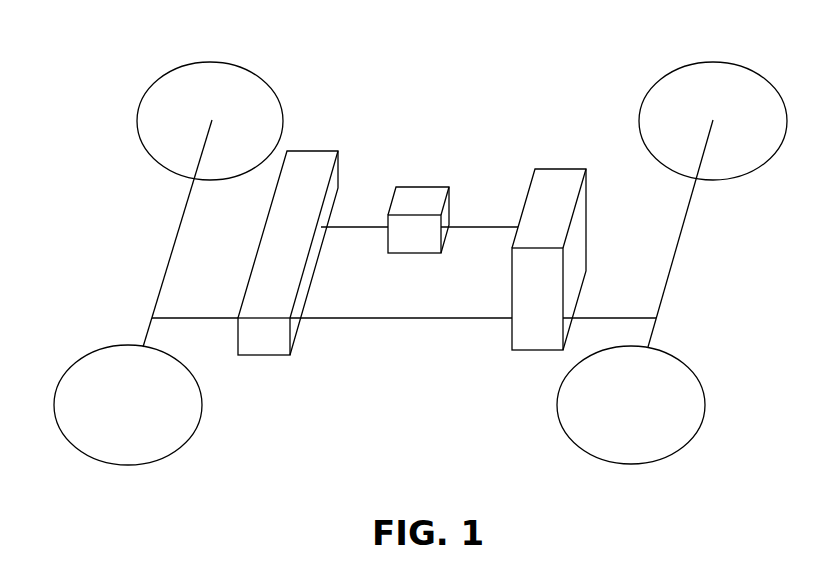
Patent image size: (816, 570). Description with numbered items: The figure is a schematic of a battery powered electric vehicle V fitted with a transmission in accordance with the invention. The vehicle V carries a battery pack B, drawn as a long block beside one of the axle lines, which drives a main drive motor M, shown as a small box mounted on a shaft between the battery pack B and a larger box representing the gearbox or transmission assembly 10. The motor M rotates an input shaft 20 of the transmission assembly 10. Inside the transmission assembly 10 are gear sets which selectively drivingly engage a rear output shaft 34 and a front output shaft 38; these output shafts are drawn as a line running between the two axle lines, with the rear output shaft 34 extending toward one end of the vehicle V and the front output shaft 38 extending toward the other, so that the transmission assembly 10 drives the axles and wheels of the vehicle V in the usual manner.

The battery powered electric vehicle V is at (582, 120).
The transmission assembly 10 is at (596, 211).
The input shaft 20 is at (482, 227).
The rear output shaft 34 is at (370, 318).
The front output shaft 38 is at (612, 318).
The battery pack B is at (312, 151).
The main drive motor M is at (424, 187).